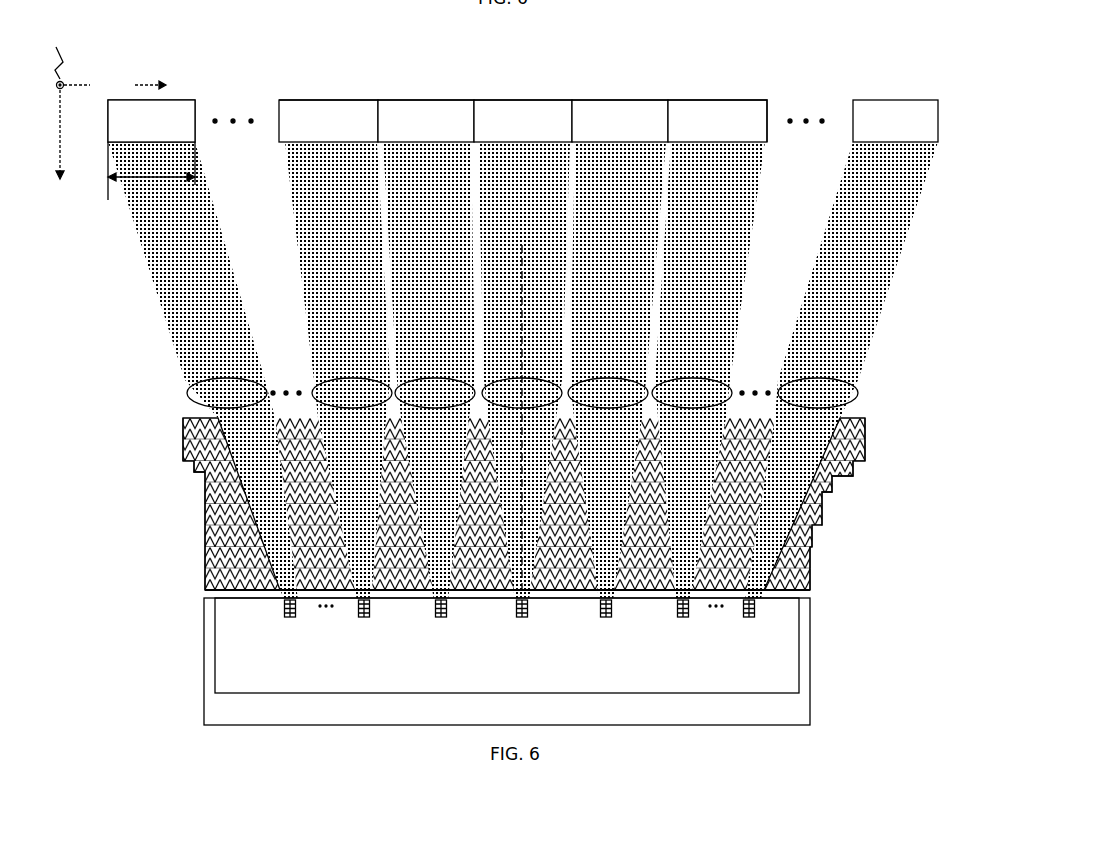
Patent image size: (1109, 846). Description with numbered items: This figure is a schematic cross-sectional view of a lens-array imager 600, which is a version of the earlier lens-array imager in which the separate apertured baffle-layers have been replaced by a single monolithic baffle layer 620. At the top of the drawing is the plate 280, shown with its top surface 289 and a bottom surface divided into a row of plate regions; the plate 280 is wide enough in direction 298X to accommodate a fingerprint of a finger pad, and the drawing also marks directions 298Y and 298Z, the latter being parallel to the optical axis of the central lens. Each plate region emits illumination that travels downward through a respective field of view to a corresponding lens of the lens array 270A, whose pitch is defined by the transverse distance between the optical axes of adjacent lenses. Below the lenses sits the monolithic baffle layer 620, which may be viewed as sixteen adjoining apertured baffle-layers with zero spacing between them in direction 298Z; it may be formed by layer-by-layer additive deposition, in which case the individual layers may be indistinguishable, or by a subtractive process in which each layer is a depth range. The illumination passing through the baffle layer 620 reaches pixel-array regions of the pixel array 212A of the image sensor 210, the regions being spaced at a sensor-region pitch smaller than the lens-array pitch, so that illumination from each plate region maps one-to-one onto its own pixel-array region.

The lens-array imager 600 is at (236, 58).
The direction 298X is at (112, 85).
The Y axis 298Y is at (76, 49).
The direction 298Z is at (76, 147).
The plate 280 is at (107, 123).
The top surface 289 is at (767, 101).
The lens array 270A is at (138, 397).
The monolithic baffle layer 620 is at (108, 413).
The pixel array 212A is at (545, 686).
The image sensor 210 is at (550, 720).